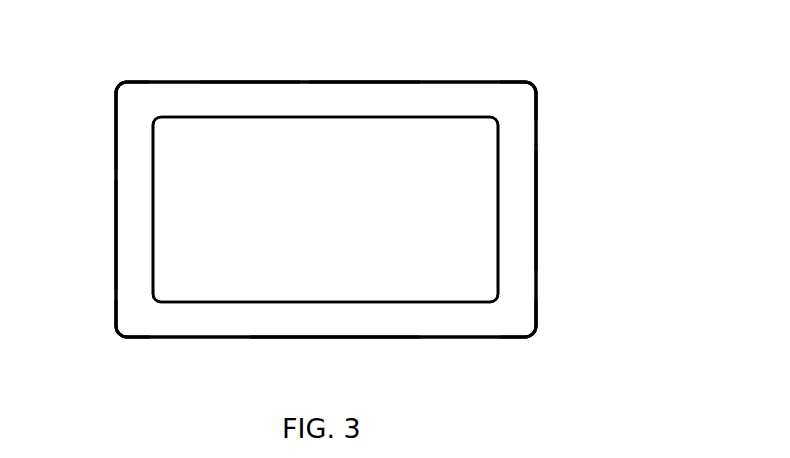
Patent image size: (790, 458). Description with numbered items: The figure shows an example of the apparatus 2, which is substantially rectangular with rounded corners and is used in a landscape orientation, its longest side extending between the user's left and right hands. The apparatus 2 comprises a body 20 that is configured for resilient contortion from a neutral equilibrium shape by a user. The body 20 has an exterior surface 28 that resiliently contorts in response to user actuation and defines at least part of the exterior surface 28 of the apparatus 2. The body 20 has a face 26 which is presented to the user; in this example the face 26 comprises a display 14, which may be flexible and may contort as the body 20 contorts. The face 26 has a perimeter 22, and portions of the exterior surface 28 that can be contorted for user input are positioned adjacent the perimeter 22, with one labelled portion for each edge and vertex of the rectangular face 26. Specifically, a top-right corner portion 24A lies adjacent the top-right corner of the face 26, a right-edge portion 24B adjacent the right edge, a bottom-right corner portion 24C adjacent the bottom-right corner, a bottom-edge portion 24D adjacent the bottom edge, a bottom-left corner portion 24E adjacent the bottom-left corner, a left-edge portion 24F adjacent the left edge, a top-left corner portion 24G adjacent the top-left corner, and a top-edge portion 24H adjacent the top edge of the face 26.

The apparatus 2 is at (643, 49).
The display 14 is at (485, 242).
The body 20 is at (453, 95).
The perimeter 22 is at (252, 82).
The top-right corner portion 24A is at (522, 103).
The right-edge portion 24B is at (522, 188).
The bottom-right corner portion 24C is at (518, 330).
The bottom-edge portion 24D is at (348, 328).
The bottom-left corner portion 24E is at (130, 323).
The left-edge portion 24F is at (130, 210).
The top-left corner portion 24G is at (142, 92).
The top-edge portion 24H is at (363, 92).
The face 26 is at (339, 224).
The exterior surface 28 is at (130, 139).